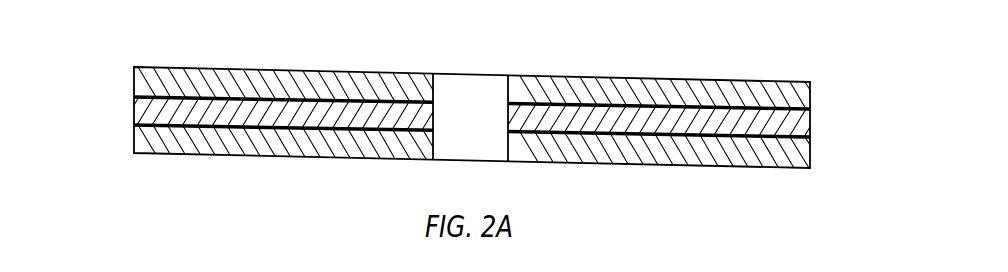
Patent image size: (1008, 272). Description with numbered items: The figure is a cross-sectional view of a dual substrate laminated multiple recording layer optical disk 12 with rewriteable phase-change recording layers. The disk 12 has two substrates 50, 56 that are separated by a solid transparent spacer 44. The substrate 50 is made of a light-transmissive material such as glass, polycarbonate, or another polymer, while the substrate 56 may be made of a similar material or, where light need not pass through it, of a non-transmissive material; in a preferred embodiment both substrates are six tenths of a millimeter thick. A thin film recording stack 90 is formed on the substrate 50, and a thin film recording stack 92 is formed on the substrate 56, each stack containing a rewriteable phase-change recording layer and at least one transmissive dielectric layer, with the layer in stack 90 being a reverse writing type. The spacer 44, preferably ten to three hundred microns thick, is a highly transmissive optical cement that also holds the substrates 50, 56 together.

The multiple recording layer optical disk 12 is at (474, 114).
The solid transparent spacer 44 is at (247, 120).
The substrate 56 is at (140, 77).
The substrate 50 is at (140, 138).
The thin film recording stack 92 is at (810, 112).
The thin film recording stack 90 is at (810, 140).